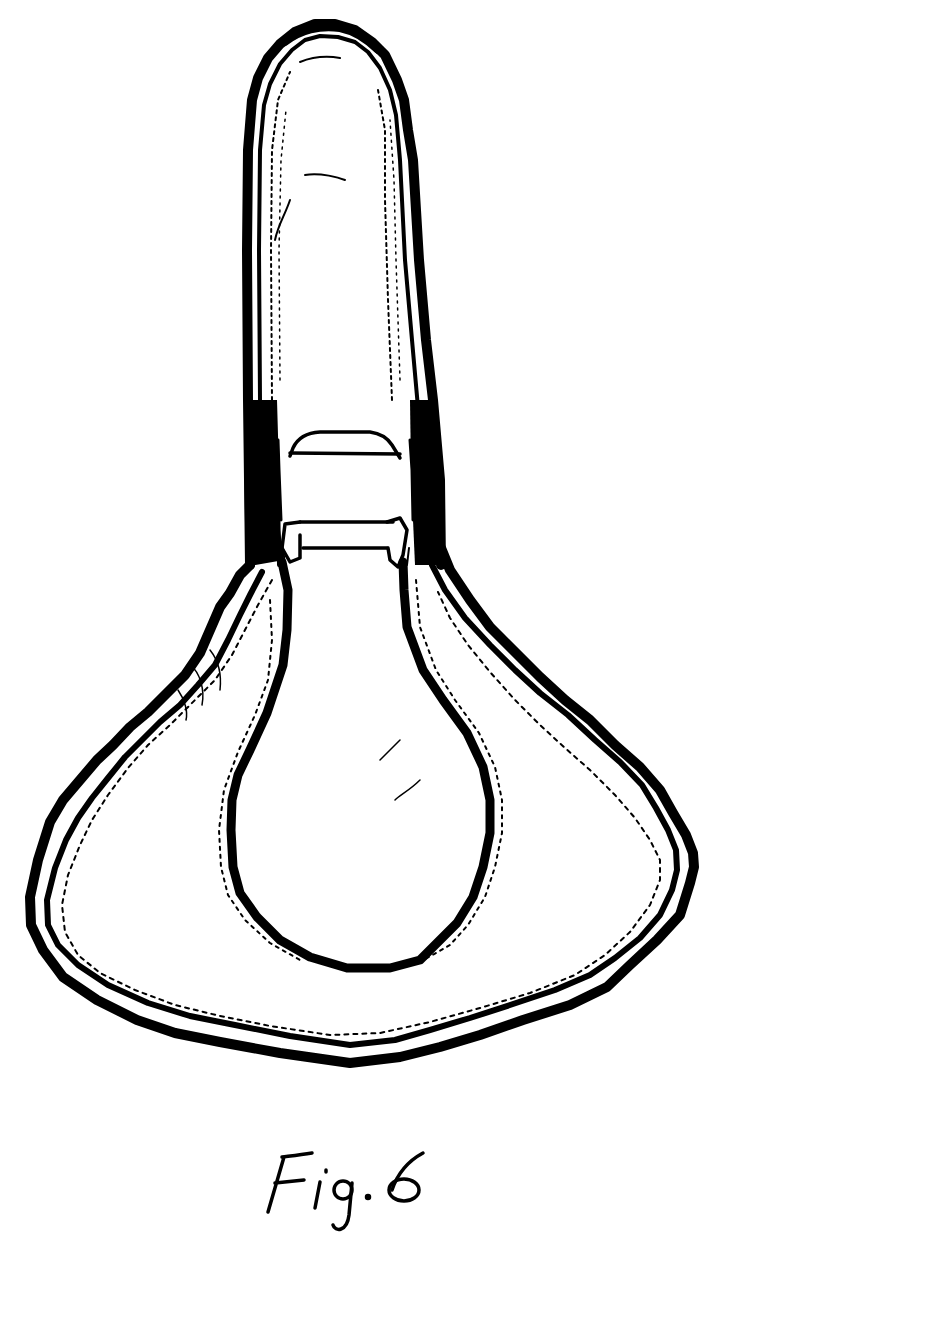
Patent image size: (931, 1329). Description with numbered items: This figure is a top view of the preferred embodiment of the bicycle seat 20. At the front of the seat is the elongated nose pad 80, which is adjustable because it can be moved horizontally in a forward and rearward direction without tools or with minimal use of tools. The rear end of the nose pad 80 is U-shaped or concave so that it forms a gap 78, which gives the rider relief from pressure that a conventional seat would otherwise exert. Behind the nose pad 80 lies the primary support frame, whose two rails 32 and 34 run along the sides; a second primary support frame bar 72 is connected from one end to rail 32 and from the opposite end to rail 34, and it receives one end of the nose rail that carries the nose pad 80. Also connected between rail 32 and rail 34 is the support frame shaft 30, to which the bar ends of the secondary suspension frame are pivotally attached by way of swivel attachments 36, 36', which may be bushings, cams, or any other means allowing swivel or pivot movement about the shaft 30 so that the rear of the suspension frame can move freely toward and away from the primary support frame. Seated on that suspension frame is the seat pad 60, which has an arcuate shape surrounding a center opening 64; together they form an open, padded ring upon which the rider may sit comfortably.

The bicycle seat 20 is at (670, 327).
The support frame shaft 30 is at (335, 542).
The rail 32 is at (440, 527).
The rail 34 is at (253, 512).
The swivel attachment 36 is at (208, 563).
The swivel attachment 36' is at (475, 499).
The seat pad 60 is at (583, 913).
The center opening 64 is at (400, 845).
The second primary support frame bar 72 is at (330, 442).
The gap 78 is at (316, 493).
The nose pad 80 is at (356, 258).